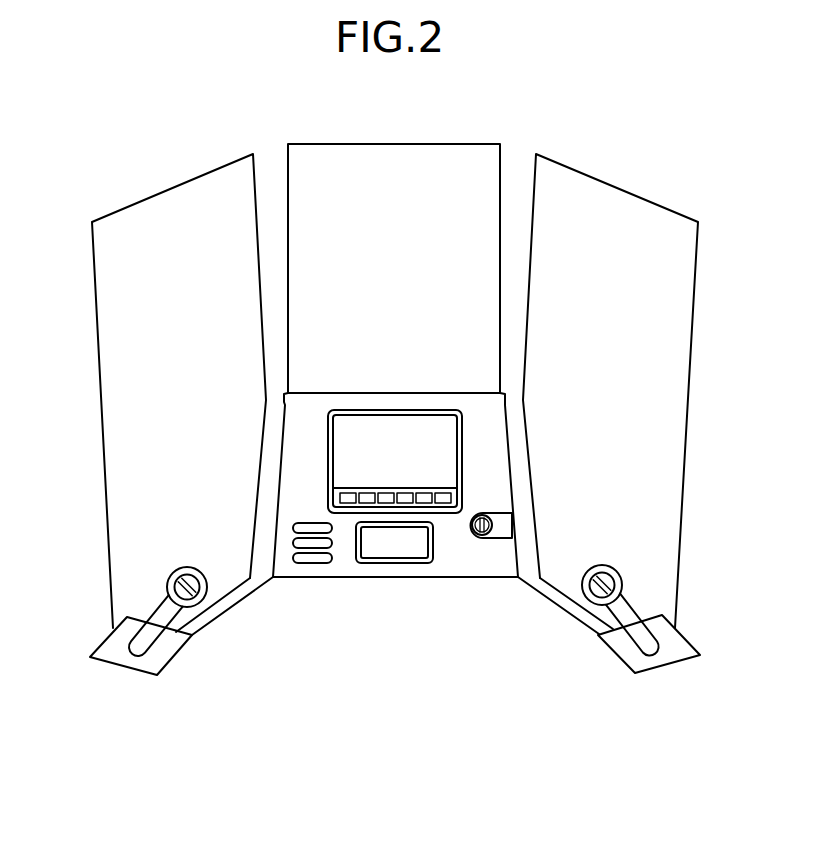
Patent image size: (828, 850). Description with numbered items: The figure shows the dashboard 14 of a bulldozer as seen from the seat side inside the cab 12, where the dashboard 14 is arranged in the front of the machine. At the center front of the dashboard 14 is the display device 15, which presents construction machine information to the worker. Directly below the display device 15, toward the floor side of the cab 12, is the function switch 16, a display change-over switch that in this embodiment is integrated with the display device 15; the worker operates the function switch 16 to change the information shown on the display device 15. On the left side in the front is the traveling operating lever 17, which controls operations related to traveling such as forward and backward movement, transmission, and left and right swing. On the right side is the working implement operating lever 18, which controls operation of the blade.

The cab 12 is at (178, 267).
The dashboard 14 is at (333, 402).
The display device 15 is at (424, 432).
The function switch 16 is at (443, 521).
The traveling operating lever 17 is at (161, 601).
The working implement operating lever 18 is at (628, 608).